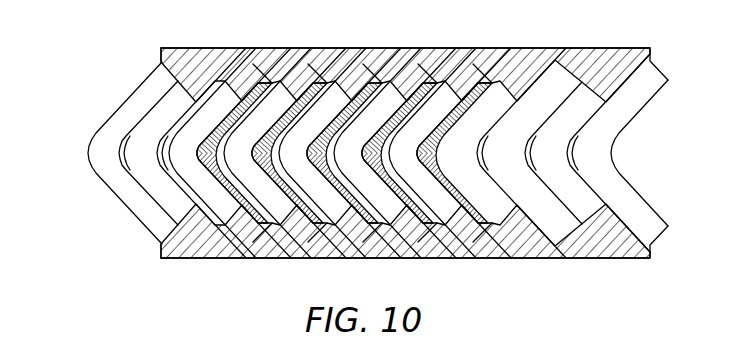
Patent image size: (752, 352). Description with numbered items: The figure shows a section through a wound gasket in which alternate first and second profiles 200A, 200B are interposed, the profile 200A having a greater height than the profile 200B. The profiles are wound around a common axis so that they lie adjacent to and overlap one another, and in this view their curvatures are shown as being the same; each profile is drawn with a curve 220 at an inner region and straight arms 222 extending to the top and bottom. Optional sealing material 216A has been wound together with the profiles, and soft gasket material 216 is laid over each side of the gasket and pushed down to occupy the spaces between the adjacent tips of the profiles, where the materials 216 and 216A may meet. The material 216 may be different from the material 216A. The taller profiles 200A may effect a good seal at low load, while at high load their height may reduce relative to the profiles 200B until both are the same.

The curve 220 is at (91, 149).
The straight arms 222 is at (128, 97).
The soft gasket material 216 is at (620, 258).
The sealing material 216A is at (313, 83).
The first profile 200A is at (575, 73).
The second profile 200B is at (284, 212).